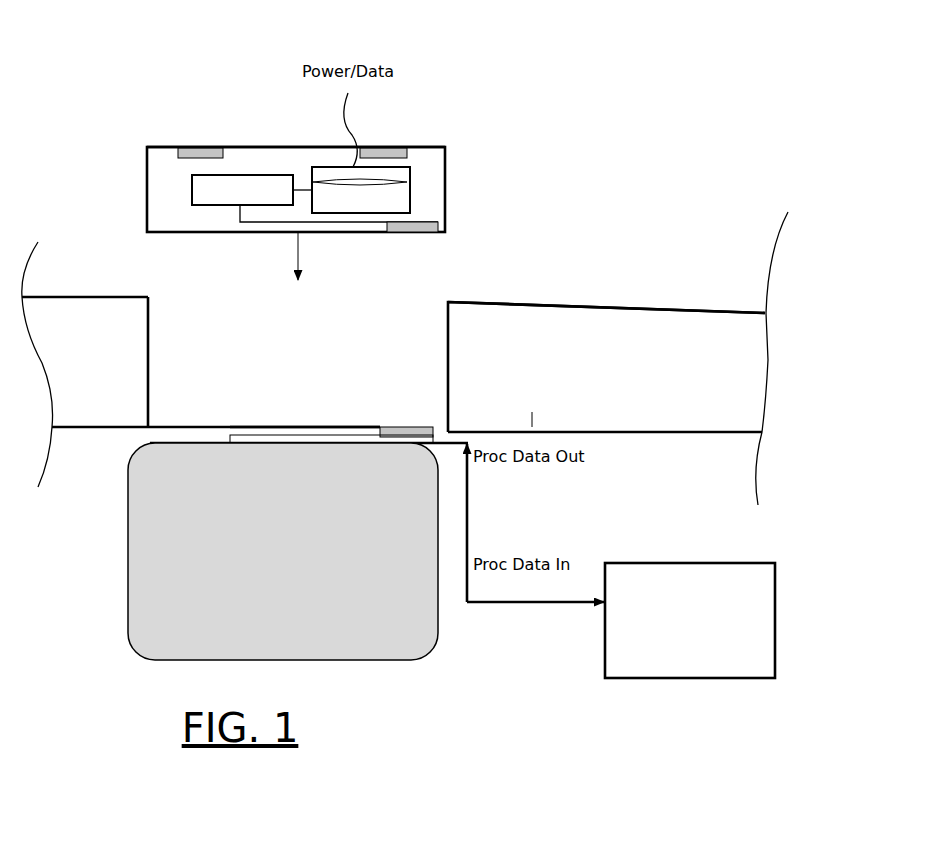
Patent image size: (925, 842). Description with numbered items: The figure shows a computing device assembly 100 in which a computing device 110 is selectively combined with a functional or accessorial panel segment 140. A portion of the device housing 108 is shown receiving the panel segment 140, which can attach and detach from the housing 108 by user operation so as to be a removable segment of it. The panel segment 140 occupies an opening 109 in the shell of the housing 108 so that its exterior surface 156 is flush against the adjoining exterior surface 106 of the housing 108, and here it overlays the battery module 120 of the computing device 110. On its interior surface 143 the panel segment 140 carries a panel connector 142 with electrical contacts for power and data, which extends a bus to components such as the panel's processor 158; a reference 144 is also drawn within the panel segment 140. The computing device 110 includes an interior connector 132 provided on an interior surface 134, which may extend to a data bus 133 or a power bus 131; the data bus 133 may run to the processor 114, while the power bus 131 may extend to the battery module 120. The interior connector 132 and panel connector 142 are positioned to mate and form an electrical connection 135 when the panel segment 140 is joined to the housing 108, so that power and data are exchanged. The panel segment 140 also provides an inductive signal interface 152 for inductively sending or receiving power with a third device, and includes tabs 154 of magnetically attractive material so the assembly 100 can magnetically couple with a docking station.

The computing device assembly 100 is at (820, 655).
The exterior surface 106 is at (82, 292).
The device housing 108 is at (643, 300).
The opening 109 is at (153, 330).
The computing device 110 is at (560, 277).
The processor 114 is at (690, 620).
The battery module 120 is at (283, 551).
The power bus 131 is at (283, 436).
The interior connector 132 is at (390, 427).
The data bus 133 is at (465, 442).
The interior surface 134 is at (328, 427).
The electrical connection 135 is at (433, 233).
The panel segment 140 is at (447, 145).
The panel connector 142 is at (408, 222).
The interior surface 143 is at (248, 233).
The module circuitry 144 is at (175, 191).
The inductive signal interface 152 is at (360, 214).
The tabs 154 is at (207, 147).
The exterior surface 156 is at (253, 147).
The processor 158 is at (208, 207).